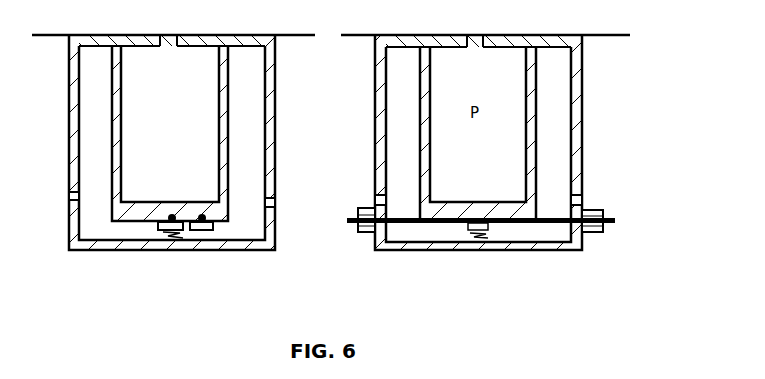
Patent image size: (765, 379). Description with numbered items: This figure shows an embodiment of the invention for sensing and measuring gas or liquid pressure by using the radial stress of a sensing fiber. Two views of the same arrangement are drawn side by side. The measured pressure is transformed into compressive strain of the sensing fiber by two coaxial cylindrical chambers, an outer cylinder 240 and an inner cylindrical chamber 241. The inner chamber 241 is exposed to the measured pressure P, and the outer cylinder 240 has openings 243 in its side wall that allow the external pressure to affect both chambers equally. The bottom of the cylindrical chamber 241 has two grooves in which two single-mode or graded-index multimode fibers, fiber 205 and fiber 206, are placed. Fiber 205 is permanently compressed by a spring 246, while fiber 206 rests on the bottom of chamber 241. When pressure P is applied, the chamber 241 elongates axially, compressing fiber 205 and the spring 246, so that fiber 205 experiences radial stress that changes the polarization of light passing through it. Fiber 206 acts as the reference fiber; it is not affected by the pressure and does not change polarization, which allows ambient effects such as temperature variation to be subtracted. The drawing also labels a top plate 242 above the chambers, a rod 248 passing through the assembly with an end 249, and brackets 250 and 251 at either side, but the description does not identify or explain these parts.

The fiber 205 is at (168, 232).
The fiber 206 is at (205, 227).
The cylinder 240 is at (280, 246).
The cylindrical chamber 241 is at (223, 220).
The top plate 242 is at (300, 36).
The openings 243 is at (277, 205).
The spring 246 is at (182, 233).
The rod 248 is at (360, 233).
The rod end 249 is at (603, 233).
The first bracket 250 is at (355, 200).
The second bracket 251 is at (607, 199).